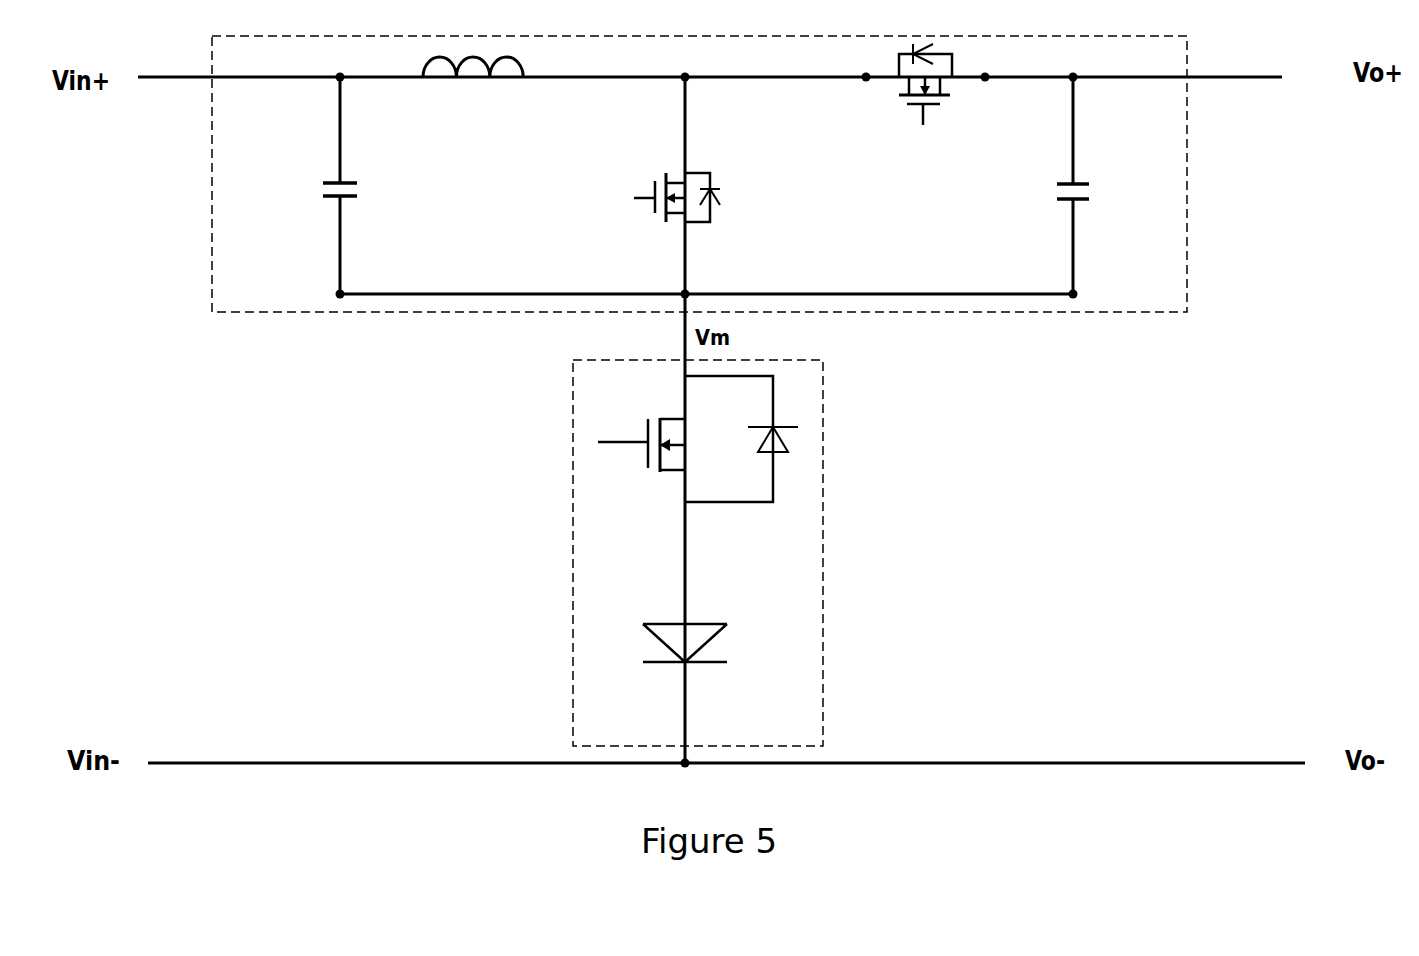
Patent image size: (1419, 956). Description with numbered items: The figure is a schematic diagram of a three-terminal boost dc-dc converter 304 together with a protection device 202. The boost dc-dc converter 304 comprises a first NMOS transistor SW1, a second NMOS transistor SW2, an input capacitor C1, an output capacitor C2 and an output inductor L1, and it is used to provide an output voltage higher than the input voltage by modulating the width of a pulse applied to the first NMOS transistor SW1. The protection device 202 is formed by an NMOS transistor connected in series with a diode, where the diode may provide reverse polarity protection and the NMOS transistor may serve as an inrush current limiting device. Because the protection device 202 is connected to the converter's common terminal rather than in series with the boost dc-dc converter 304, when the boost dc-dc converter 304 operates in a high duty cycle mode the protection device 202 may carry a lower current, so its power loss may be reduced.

The boost dc-dc converter 304 is at (187, 224).
The first protection device 202 is at (836, 585).
The output inductor L1 is at (473, 94).
The input capacitor C1 is at (317, 185).
The output capacitor C2 is at (1051, 185).
The first NMOS transistor SW1 is at (889, 88).
The second NMOS transistor SW2 is at (712, 197).